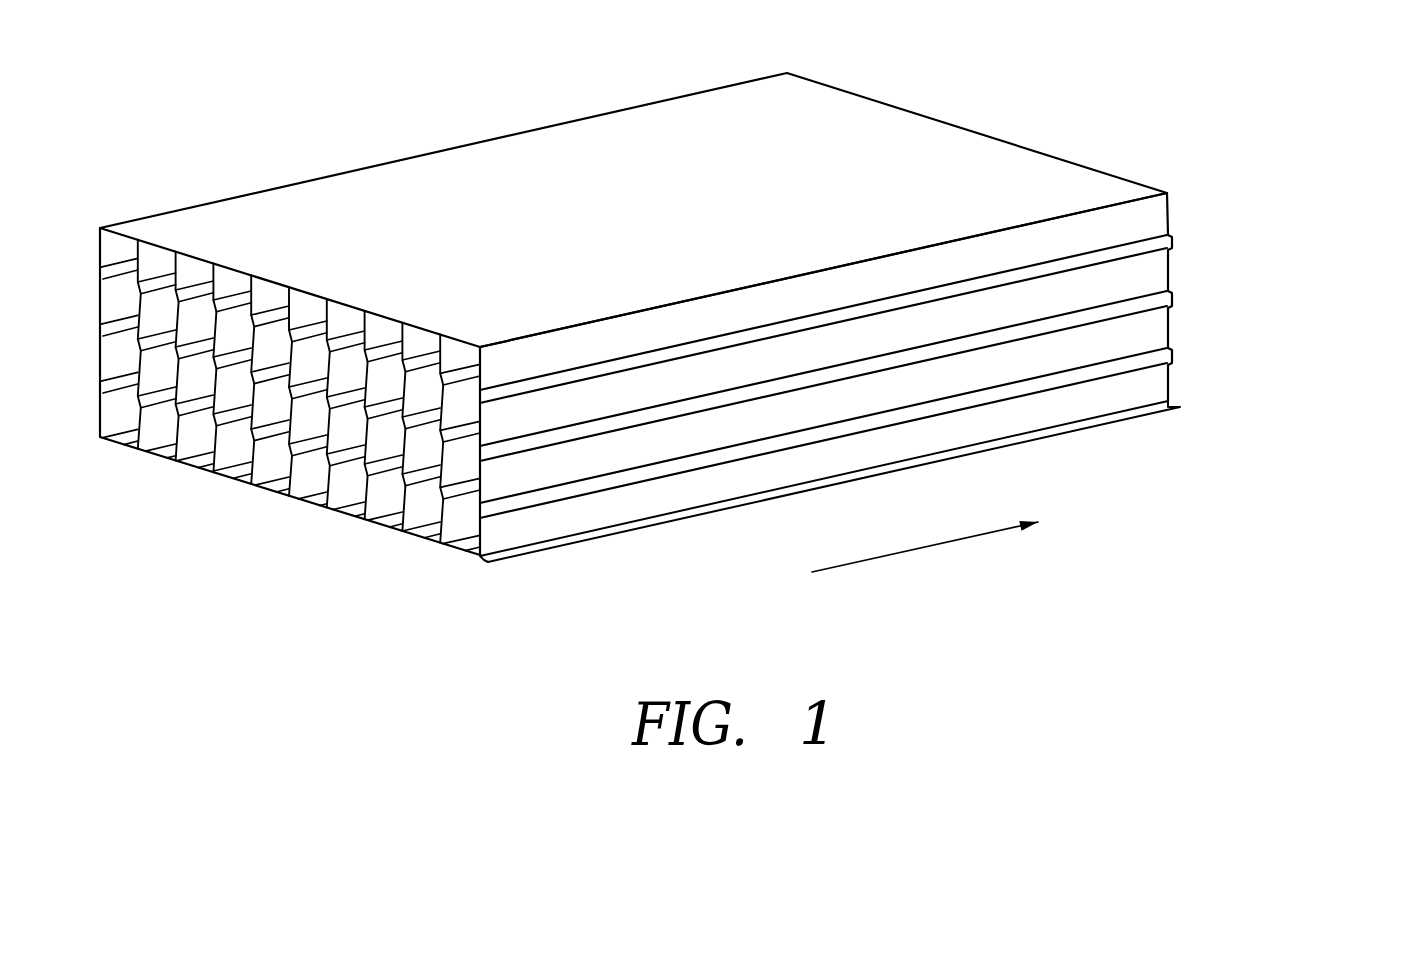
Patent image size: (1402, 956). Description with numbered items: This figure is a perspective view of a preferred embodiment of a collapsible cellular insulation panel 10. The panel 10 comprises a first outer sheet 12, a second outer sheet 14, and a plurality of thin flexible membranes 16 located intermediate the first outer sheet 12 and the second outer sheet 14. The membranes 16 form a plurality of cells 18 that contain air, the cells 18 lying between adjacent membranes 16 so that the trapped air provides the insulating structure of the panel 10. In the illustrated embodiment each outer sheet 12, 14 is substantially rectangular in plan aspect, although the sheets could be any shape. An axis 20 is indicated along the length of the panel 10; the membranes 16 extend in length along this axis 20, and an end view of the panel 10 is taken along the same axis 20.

The panel 10 is at (1200, 198).
The first outer sheet 12 is at (542, 227).
The second outer sheet 14 is at (573, 545).
The thin flexible membranes 16 is at (103, 440).
The cells 18 is at (192, 280).
The axis 20 is at (925, 569).